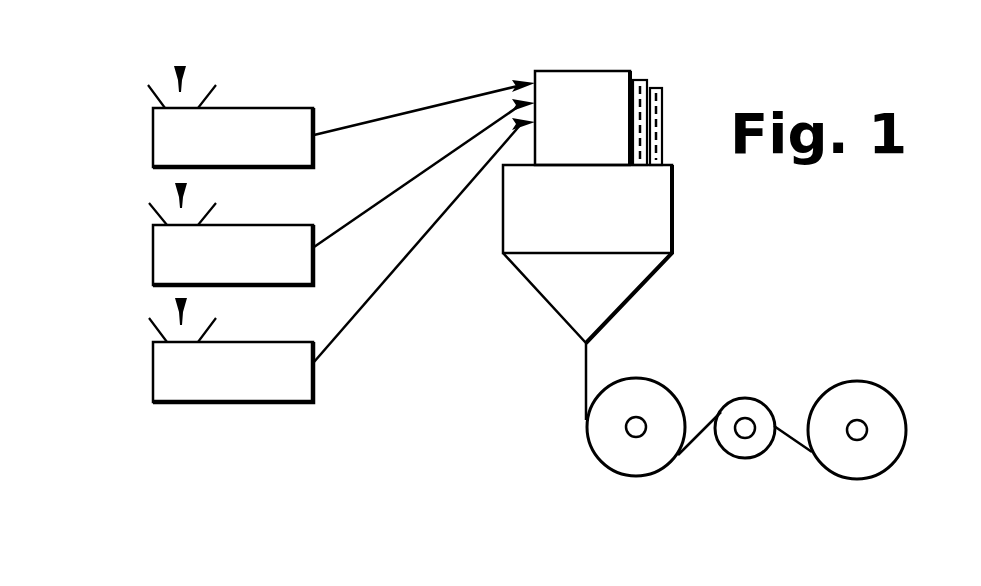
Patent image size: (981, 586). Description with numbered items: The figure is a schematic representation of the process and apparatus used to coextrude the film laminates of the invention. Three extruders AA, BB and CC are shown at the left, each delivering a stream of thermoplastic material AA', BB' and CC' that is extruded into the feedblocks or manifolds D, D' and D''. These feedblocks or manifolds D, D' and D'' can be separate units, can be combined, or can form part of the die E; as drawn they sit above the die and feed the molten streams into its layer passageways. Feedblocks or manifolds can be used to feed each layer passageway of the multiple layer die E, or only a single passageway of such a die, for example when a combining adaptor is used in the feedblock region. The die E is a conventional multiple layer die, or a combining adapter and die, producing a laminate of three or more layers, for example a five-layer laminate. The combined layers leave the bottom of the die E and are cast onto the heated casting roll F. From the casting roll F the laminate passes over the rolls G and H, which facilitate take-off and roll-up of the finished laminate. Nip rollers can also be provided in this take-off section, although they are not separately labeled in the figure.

The extruder AA is at (233, 137).
The stream of thermoplastic material AA' is at (129, 75).
The extruder BB is at (233, 255).
The stream of thermoplastic material BB' is at (129, 194).
The extruder CC is at (233, 372).
The stream of thermoplastic material CC' is at (130, 310).
The feedblock or manifold D is at (582, 91).
The feedblock or manifold D' is at (653, 91).
The feedblock or manifold D'' is at (688, 107).
The multiple layer die E is at (673, 205).
The heated casting roll F is at (653, 378).
The roll G is at (747, 398).
The roll H is at (855, 380).